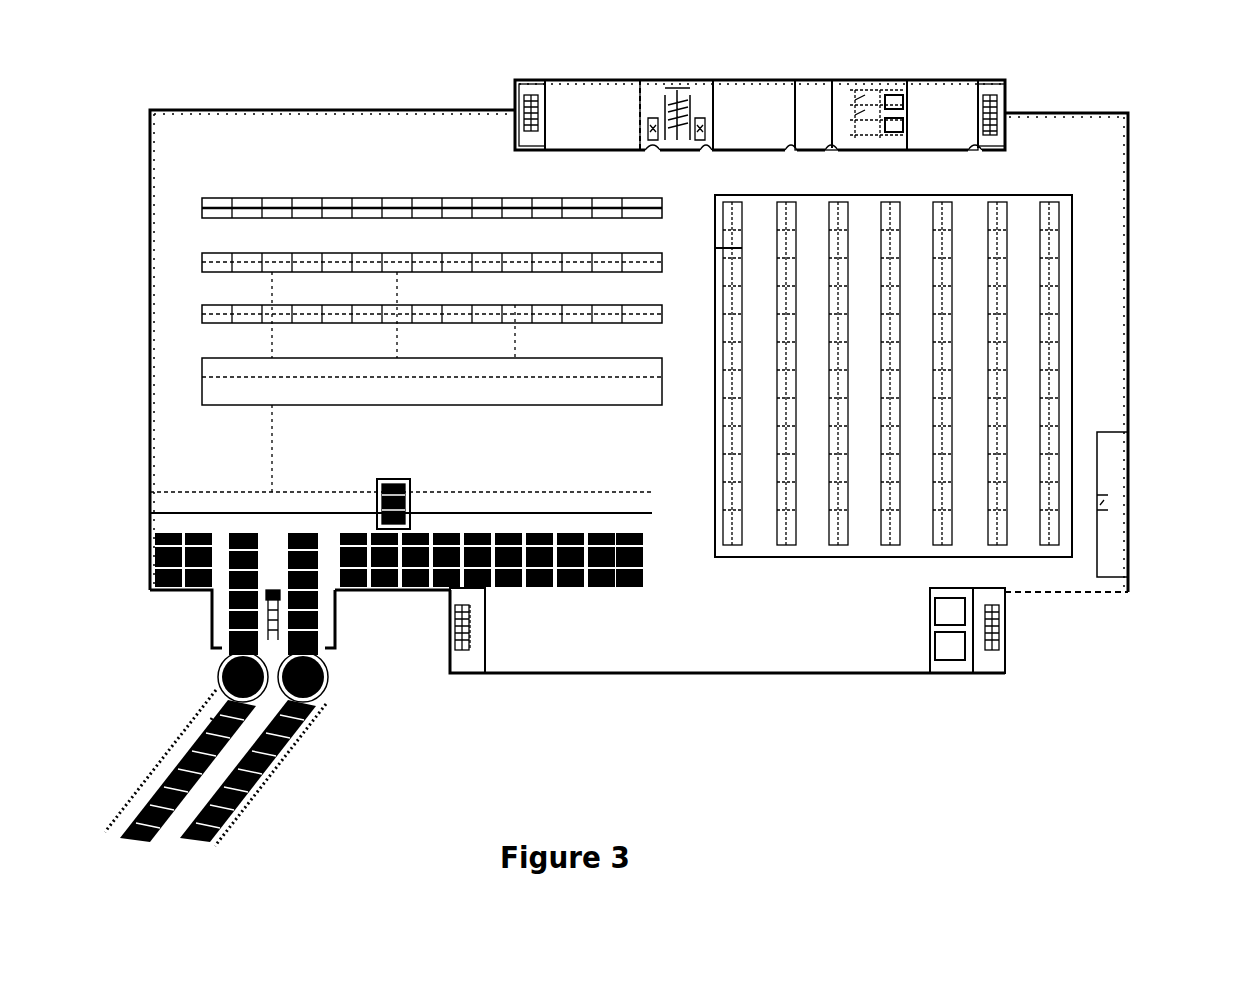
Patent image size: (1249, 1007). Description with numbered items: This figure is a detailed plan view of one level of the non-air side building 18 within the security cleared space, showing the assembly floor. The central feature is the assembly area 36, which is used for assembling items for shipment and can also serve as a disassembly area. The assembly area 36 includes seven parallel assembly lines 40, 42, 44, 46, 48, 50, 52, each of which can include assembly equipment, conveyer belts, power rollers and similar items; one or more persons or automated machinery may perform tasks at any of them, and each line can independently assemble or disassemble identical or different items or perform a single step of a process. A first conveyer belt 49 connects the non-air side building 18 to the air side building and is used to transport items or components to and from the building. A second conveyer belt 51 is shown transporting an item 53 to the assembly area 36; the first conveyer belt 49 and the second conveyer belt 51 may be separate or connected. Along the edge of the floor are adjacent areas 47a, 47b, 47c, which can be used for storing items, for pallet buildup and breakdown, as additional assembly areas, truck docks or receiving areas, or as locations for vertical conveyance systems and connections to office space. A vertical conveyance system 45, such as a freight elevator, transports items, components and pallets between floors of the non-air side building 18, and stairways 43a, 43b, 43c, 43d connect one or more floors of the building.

The non-air side building 18 is at (1167, 105).
The assembly area 36 is at (715, 340).
The assembly line 40 is at (732, 545).
The assembly line 42 is at (786, 545).
The assembly line 44 is at (838, 545).
The assembly line 46 is at (890, 545).
The assembly line 48 is at (942, 545).
The assembly line 50 is at (997, 545).
The assembly line 52 is at (1049, 545).
The stairway 43a is at (470, 676).
The stairway 43b is at (997, 676).
The stairway 43c is at (523, 80).
The stairway 43d is at (1003, 80).
The vertical conveyance system 45 is at (930, 632).
The adjacent area 47a is at (590, 80).
The adjacent area 47b is at (817, 80).
The adjacent area 47c is at (953, 80).
The first conveyer belt 49 is at (283, 742).
The second conveyer belt 51 is at (348, 492).
The item 53 is at (411, 512).